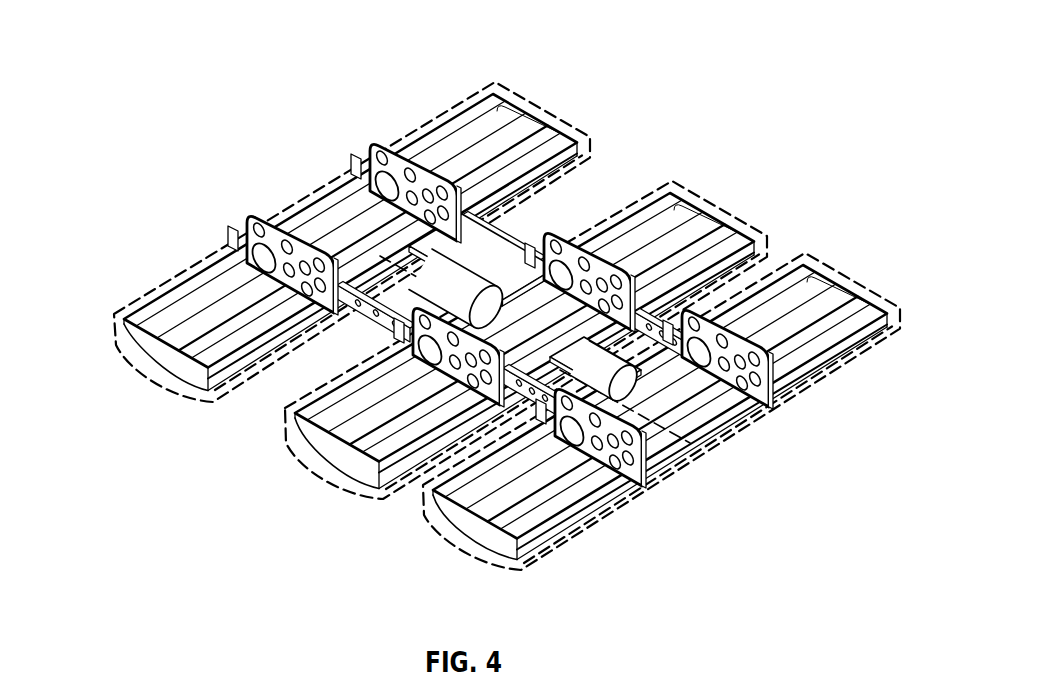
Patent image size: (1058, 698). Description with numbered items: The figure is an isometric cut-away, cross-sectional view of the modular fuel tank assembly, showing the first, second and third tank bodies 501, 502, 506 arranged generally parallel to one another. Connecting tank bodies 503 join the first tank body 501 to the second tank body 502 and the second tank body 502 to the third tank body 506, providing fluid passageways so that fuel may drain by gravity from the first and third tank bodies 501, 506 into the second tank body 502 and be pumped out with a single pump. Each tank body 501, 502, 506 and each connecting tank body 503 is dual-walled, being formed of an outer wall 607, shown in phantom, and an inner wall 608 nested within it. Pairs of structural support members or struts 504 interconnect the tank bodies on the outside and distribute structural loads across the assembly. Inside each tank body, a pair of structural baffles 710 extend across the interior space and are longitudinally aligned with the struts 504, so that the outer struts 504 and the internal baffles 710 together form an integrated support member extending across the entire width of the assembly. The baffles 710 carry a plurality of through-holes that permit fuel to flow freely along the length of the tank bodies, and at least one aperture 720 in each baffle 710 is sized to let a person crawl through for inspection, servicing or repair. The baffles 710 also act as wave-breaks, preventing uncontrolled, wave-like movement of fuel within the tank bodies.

The first tank body 501 is at (137, 407).
The second tank body 502 is at (313, 498).
The third tank body 506 is at (453, 574).
The connecting tank body 503 is at (563, 370).
The structural support member (strut) 504 is at (513, 227).
The outer wall 607 is at (172, 280).
The inner wall 608 is at (157, 350).
The structural baffle 710 is at (255, 217).
The aperture 720 is at (390, 177).